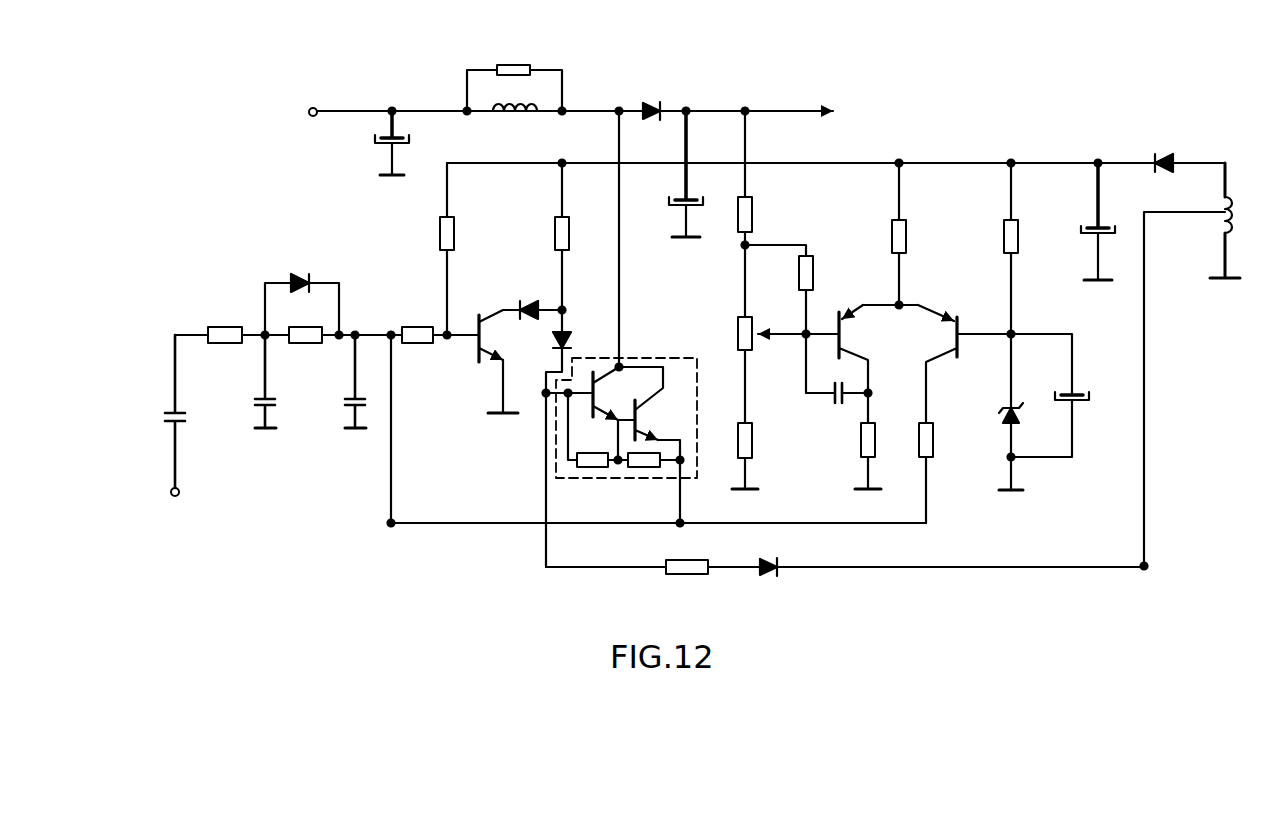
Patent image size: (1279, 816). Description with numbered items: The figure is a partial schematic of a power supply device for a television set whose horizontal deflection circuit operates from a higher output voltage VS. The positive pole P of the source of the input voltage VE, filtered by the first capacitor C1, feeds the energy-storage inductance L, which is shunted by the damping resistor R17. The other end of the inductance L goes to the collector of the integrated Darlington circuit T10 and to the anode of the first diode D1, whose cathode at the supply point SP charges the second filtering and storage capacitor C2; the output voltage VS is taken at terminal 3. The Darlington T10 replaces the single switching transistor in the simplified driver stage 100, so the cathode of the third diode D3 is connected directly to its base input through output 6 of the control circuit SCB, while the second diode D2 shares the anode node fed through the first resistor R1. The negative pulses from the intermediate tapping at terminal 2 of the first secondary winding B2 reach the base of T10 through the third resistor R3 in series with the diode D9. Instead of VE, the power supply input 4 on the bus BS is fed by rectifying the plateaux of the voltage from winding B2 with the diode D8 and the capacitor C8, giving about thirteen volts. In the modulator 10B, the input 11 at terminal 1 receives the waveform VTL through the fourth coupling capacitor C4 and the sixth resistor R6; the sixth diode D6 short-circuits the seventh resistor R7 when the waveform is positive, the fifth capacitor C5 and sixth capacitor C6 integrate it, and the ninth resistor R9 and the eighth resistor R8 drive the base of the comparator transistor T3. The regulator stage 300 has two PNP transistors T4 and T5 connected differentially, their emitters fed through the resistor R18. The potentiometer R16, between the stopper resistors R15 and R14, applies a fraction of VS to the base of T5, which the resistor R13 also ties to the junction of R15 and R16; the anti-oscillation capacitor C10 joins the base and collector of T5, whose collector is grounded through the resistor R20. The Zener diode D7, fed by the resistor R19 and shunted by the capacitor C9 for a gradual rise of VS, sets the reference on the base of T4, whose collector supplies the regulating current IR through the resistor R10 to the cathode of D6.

The input voltage VE is at (458, 113).
The positive pole P is at (318, 104).
The output voltage VS is at (764, 113).
The damping resistor R17 is at (515, 64).
The energy-storage inductance L is at (513, 118).
The supply bus BS is at (596, 103).
The first diode D1 is at (654, 96).
The output supply point SP is at (688, 108).
The output terminal 3 is at (747, 114).
The power supply input 4 is at (1011, 160).
The diode D8 is at (1170, 145).
The first secondary winding B2 is at (1218, 226).
The capacitor C8 is at (1090, 234).
The first capacitor C1 is at (385, 141).
The second filtering and storage capacitor C2 is at (676, 205).
The eighth resistor R8 is at (440, 242).
The first resistor R1 is at (555, 240).
The fourth NPN transistor T3 is at (484, 337).
The second diode D2 is at (532, 303).
The third diode D3 is at (577, 438).
The driver stage 100 is at (608, 279).
The integrated Darlington circuit T10 is at (633, 352).
The output of control circuit 6 is at (543, 395).
The sixth resistor R6 is at (225, 326).
The sixth diode D6 is at (300, 276).
The seventh resistor R7 is at (305, 344).
The fifth capacitor C5 is at (256, 409).
The sixth capacitor C6 is at (346, 409).
The fourth coupling capacitor C4 is at (184, 421).
The input terminal 1 is at (182, 491).
The line transformer voltage waveform VTL is at (170, 509).
The ninth resistor R9 is at (420, 344).
The modulator 10B is at (403, 378).
The modulator input 11 is at (393, 521).
The regulating current IR is at (790, 515).
The stopper resistor R15 is at (753, 226).
The potentiometer R16 is at (737, 338).
The stopper resistor R14 is at (752, 441).
The resistor R13 is at (813, 276).
The anti-oscillation capacitor C10 is at (838, 401).
The PNP transistor T5 is at (846, 336).
The resistor R20 is at (861, 448).
The resistor R18 is at (906, 236).
The regulator stage 300 is at (933, 297).
The PNP transistor T4 is at (961, 323).
The resistor R10 is at (933, 438).
The resistor R19 is at (1018, 236).
The Zener diode D7 is at (1003, 412).
The capacitor C9 is at (1077, 401).
The tapping terminal 2 is at (1147, 565).
The control circuit SCB is at (538, 530).
The third resistor R3 is at (703, 577).
The diode D9 is at (777, 578).